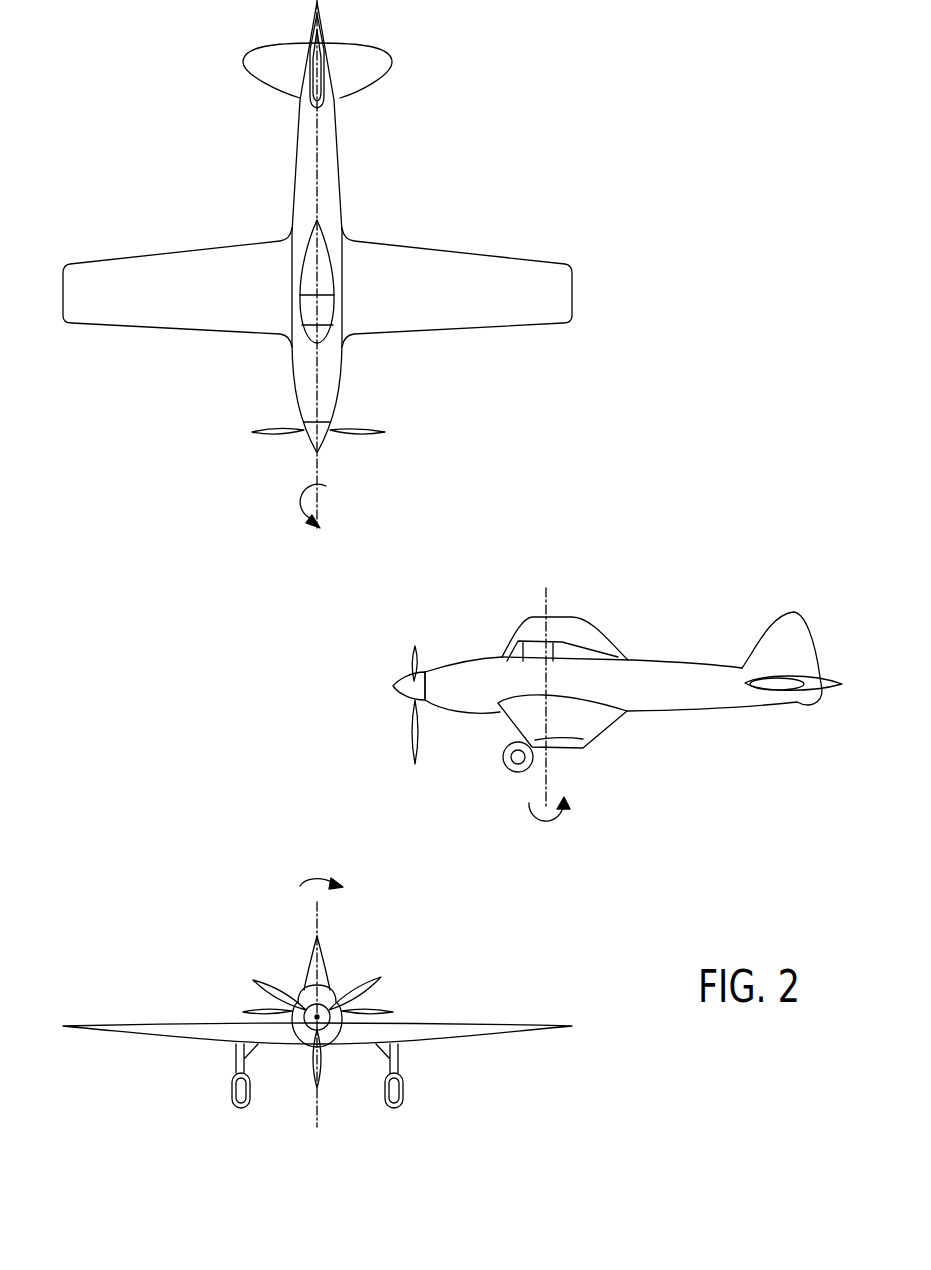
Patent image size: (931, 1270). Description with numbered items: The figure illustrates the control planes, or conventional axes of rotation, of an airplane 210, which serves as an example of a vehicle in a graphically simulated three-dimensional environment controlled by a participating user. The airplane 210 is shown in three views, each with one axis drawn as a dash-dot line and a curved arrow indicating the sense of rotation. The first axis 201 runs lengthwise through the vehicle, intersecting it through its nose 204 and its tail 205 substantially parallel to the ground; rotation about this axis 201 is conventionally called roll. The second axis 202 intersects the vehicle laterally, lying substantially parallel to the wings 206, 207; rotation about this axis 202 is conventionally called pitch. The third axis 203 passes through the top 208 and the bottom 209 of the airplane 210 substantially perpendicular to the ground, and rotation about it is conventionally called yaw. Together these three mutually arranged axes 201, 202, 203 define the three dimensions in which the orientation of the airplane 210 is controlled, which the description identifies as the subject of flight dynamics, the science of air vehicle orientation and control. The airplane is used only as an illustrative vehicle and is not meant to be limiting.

The roll axis 201 is at (311, 482).
The pitch axis 202 is at (548, 787).
The yaw axis 203 is at (318, 928).
The nose 204 is at (327, 437).
The tail 205 is at (328, 70).
The wing 206 is at (584, 633).
The wing 207 is at (587, 722).
The top 208 is at (338, 992).
The bottom 209 is at (327, 1047).
The airplane 210 is at (507, 257).